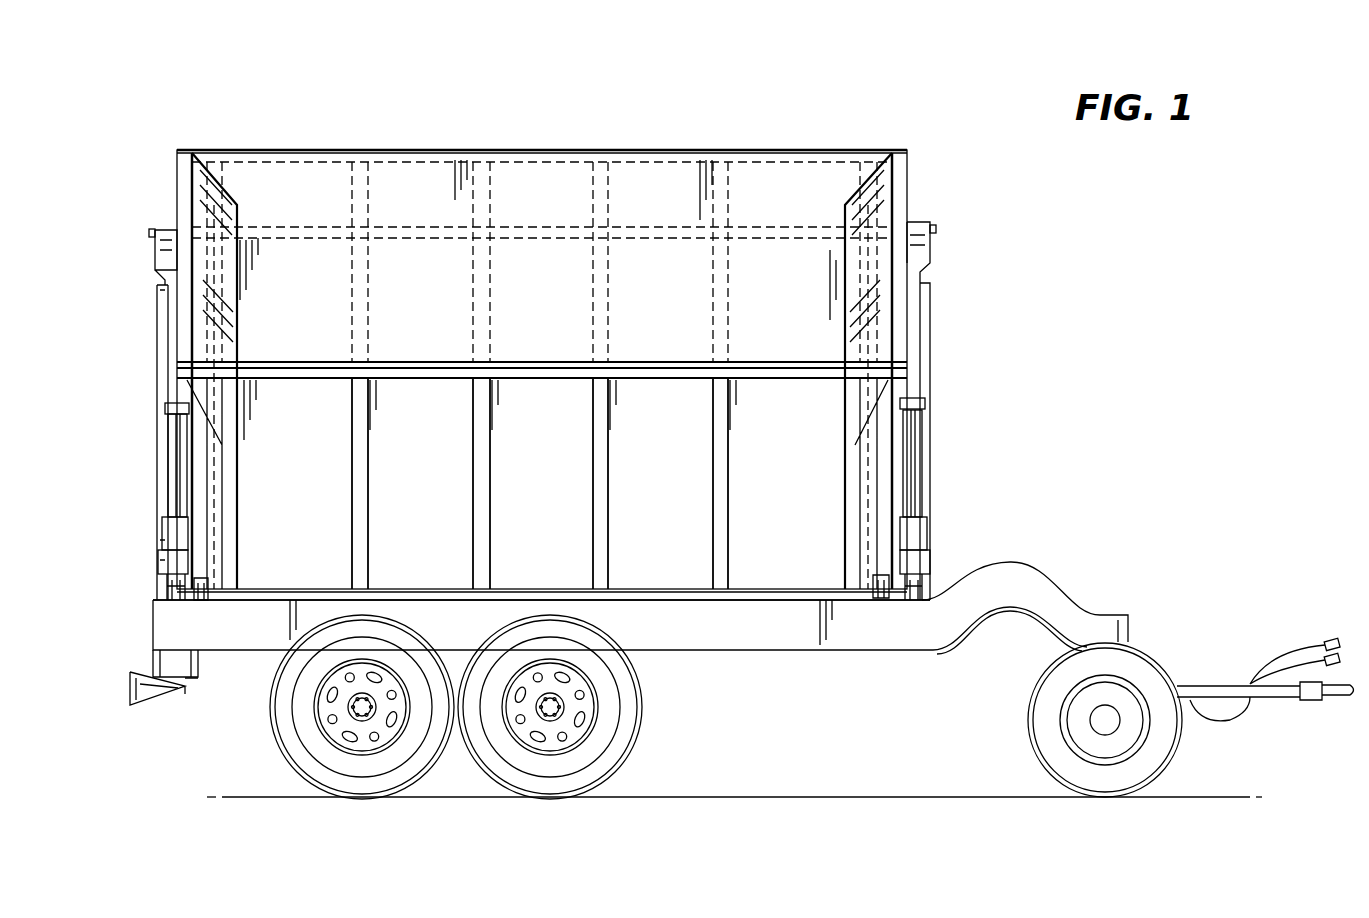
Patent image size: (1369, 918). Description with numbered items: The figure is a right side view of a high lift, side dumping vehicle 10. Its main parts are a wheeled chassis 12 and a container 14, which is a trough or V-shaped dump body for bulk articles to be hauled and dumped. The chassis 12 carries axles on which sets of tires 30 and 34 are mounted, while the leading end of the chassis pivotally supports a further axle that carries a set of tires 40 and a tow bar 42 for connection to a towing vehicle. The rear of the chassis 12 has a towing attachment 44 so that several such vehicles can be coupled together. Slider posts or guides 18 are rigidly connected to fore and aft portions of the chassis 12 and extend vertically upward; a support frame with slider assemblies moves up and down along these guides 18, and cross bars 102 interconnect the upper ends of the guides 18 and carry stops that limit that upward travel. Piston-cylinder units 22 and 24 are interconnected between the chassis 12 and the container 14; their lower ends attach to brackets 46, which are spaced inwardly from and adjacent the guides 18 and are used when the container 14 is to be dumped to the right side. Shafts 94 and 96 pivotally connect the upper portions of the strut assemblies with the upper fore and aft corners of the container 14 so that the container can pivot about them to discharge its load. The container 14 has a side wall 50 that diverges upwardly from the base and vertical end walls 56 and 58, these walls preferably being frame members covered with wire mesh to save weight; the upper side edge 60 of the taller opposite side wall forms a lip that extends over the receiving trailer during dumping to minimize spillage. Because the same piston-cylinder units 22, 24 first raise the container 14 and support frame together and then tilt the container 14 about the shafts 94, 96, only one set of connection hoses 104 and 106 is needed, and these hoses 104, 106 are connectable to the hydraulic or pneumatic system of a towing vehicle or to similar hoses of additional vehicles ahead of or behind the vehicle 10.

The vehicle 10 is at (274, 99).
The chassis 12 is at (1068, 590).
The container 14 is at (750, 146).
The slider posts or guides 18 is at (172, 455).
The piston-cylinder unit 22 is at (876, 535).
The piston-cylinder unit 24 is at (216, 548).
The tire 30 is at (638, 729).
The tire 34 is at (282, 734).
The tires 40 is at (1172, 752).
The tow bar 42 is at (1341, 698).
The towing attachment 44 is at (135, 706).
The brackets 46 is at (204, 600).
The side wall 50 is at (554, 491).
The end wall 56 is at (222, 496).
The end wall 58 is at (861, 477).
The upper side edge 60 is at (531, 150).
The shaft 94 is at (936, 229).
The shaft 96 is at (149, 232).
The cross bars 102 is at (168, 409).
The hose 104 is at (1314, 641).
The hose 106 is at (1322, 659).